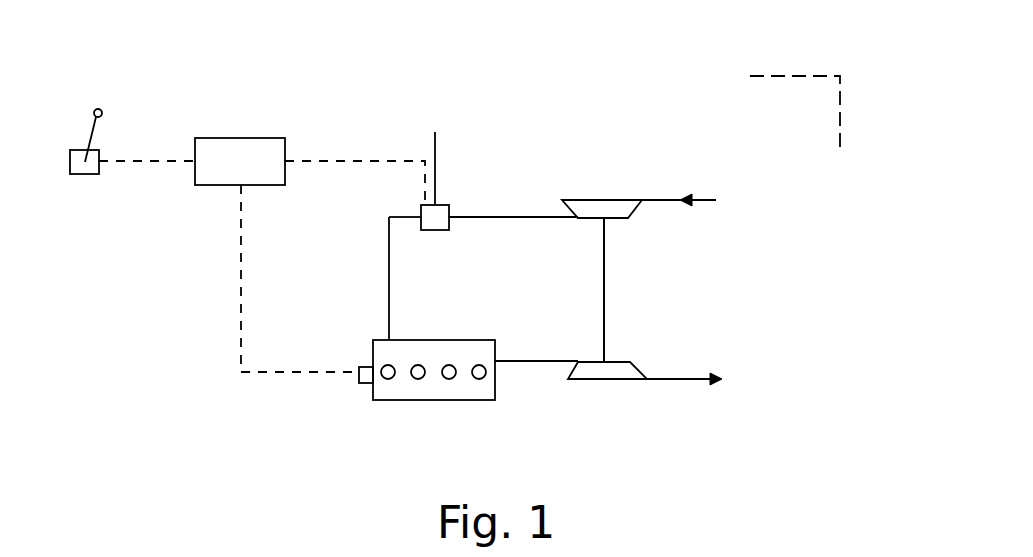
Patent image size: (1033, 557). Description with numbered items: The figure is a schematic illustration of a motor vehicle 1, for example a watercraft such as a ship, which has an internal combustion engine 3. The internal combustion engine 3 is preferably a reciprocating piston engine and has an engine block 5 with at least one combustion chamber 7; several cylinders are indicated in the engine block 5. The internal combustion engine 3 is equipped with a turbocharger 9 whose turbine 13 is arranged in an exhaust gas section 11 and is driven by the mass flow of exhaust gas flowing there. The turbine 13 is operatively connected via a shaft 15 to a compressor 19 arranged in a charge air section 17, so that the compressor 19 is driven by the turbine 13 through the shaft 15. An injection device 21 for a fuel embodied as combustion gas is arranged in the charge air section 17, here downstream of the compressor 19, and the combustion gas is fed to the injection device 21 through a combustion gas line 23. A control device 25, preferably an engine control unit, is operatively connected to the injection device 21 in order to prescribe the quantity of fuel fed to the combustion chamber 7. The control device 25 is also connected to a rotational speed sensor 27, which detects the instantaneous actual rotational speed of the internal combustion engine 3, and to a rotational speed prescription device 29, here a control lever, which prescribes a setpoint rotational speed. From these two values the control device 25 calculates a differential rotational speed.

The motor vehicle 1 is at (842, 72).
The internal combustion engine 3 is at (627, 72).
The engine block 5 is at (465, 400).
The combustion chamber 7 is at (418, 375).
The turbocharger 9 is at (694, 273).
The exhaust gas section 11 is at (683, 380).
The turbine 13 is at (610, 380).
The shaft 15 is at (605, 288).
The charge air section 17 is at (665, 198).
The compressor 19 is at (605, 198).
The injection device 21 is at (432, 230).
The combustion gas line 23 is at (436, 155).
The control device 25 is at (241, 138).
The rotational speed sensor 27 is at (355, 378).
The rotational speed prescription device 29 is at (84, 172).